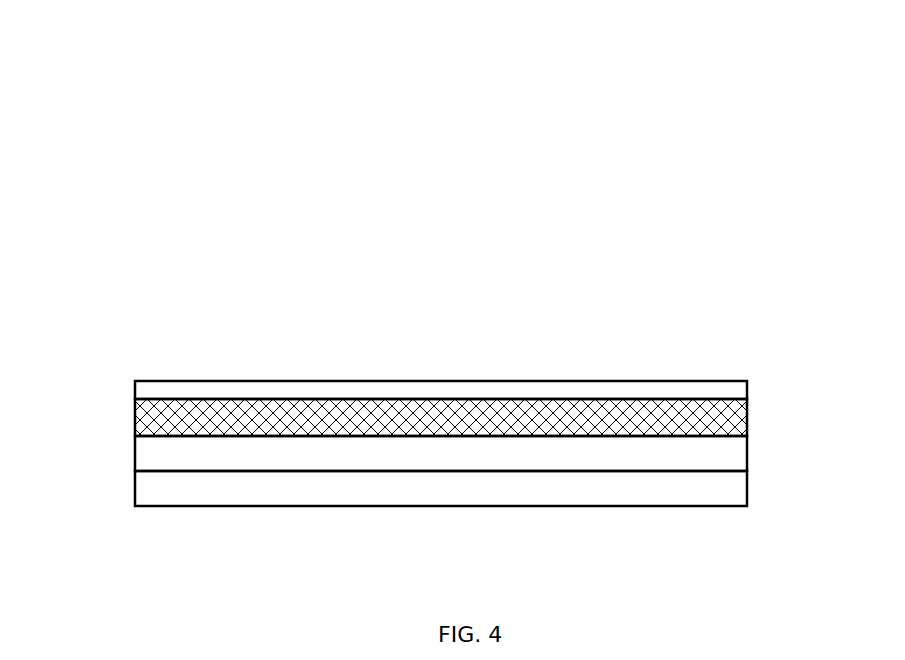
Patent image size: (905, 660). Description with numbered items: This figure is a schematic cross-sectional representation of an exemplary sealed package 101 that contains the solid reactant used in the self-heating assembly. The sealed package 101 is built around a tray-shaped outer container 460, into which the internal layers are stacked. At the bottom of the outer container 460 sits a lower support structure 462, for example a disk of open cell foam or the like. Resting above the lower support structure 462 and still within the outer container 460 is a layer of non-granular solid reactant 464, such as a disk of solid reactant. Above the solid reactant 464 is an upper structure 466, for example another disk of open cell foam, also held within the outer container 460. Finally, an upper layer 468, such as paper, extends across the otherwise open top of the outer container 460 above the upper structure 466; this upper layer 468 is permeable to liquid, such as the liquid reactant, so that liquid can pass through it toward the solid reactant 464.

The sealed package 101 is at (153, 162).
The tray-shaped outer container 460 is at (85, 388).
The lower support structure 462 is at (303, 495).
The solid reactant 464 is at (262, 457).
The upper structure 466 is at (220, 417).
The upper layer 468 is at (165, 390).